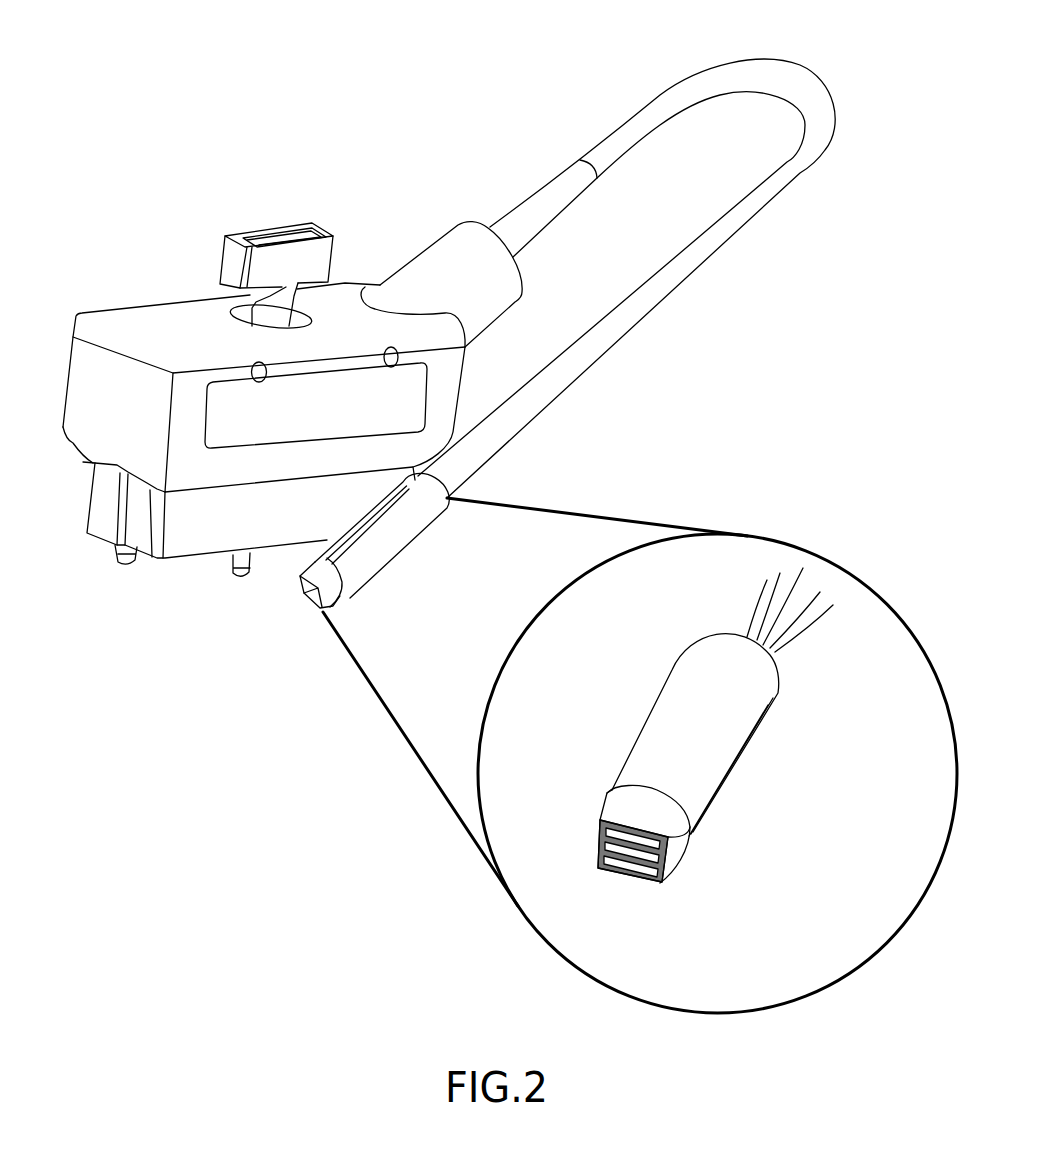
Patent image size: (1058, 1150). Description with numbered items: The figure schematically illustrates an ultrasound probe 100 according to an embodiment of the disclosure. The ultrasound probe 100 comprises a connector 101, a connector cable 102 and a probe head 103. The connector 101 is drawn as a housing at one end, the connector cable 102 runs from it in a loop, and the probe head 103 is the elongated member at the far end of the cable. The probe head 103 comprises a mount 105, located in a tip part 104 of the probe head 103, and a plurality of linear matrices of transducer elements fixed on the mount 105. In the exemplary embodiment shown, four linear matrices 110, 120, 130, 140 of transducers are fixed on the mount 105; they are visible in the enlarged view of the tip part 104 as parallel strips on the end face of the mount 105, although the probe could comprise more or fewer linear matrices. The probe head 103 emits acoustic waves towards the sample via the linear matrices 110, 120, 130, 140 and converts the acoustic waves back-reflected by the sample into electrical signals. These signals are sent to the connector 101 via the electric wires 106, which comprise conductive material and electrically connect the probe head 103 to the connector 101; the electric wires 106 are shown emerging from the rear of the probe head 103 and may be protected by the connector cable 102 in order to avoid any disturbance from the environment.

The ultrasound probe 100 is at (76, 563).
The connector 101 is at (86, 312).
The connector cable 102 is at (690, 68).
The probe head 103 is at (420, 546).
The tip part 104 is at (340, 597).
The mount 105 is at (600, 850).
The electric wires 106 is at (800, 643).
The linear matrix of transducers 110 is at (668, 838).
The linear matrix of transducers 120 is at (668, 852).
The linear matrix of transducers 130 is at (668, 868).
The linear matrix of transducers 140 is at (662, 880).